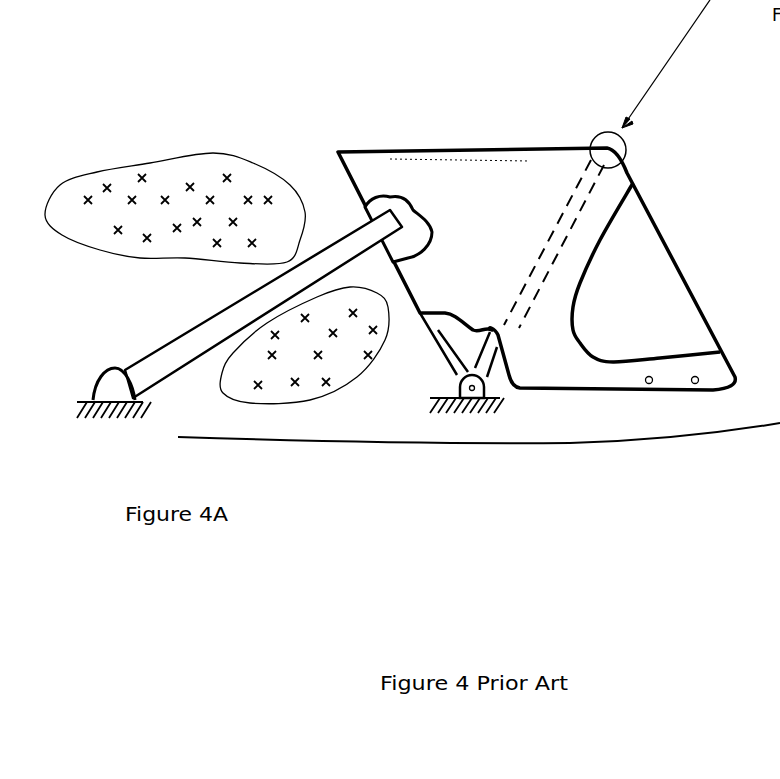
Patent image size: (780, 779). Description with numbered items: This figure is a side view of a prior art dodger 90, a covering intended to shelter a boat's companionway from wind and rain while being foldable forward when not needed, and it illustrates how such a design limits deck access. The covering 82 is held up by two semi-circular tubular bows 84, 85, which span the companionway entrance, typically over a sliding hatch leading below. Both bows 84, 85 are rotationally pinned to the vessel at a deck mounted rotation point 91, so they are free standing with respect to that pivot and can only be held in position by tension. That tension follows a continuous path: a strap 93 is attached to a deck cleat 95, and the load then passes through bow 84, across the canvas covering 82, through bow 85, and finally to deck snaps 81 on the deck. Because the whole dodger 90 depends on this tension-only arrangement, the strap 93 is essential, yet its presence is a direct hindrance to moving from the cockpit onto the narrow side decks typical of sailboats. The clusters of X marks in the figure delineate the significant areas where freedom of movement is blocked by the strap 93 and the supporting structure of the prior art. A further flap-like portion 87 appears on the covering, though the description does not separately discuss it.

The dodger 90 is at (330, 113).
The covering 82 is at (480, 163).
The tubular bow 85 is at (580, 203).
The flap 87 is at (645, 238).
The deck snaps 81 is at (652, 385).
The tubular bow 84 is at (437, 330).
The deck mounted rotation point 91 is at (475, 398).
The strap 93 is at (188, 357).
The deck cleat 95 is at (103, 370).